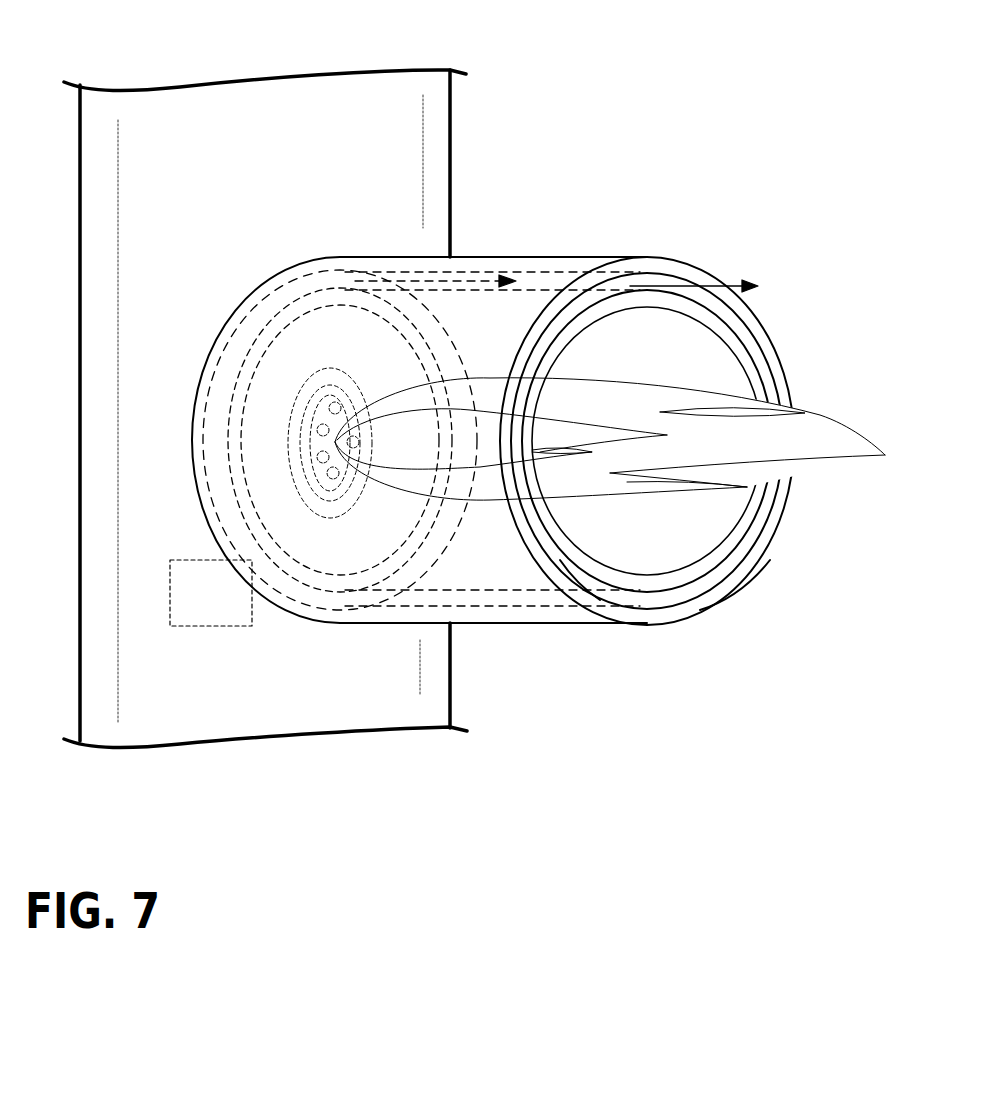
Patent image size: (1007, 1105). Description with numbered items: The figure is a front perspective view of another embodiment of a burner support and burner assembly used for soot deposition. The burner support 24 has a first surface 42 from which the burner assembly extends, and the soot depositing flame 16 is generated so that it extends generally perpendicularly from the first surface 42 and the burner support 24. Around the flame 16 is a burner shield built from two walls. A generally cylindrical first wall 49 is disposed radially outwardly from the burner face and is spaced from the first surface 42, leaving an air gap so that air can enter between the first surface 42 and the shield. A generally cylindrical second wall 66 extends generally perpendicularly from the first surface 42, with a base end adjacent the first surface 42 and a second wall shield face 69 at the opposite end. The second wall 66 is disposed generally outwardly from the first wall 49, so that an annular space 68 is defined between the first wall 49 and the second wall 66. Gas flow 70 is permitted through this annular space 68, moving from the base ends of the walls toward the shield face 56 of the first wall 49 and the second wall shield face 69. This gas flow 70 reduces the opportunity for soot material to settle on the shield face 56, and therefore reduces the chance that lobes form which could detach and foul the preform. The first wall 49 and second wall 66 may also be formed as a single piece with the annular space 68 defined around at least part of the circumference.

The burner support 24 is at (365, 68).
The first surface 42 is at (392, 172).
The second wall 66 is at (553, 258).
The annular space 68 is at (637, 283).
The gas flow 70 is at (710, 287).
The shield face 56 is at (717, 335).
The second wall shield face 69 is at (748, 565).
The first wall 49 is at (573, 570).
The flame 16 is at (805, 441).